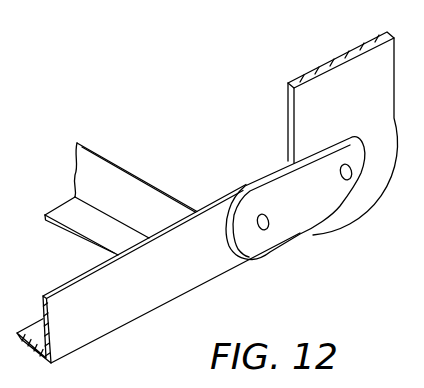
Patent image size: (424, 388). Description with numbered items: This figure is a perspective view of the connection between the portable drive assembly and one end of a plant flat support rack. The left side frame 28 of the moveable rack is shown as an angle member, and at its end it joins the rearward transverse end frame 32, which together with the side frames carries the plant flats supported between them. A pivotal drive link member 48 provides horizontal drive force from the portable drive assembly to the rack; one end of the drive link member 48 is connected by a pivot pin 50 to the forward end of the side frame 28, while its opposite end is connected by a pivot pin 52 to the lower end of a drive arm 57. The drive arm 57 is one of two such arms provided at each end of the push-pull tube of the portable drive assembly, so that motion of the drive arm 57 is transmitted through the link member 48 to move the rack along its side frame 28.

The left side frame 28 is at (105, 319).
The rearward transverse end frame 32 is at (124, 165).
The pivotal drive link member 48 is at (293, 223).
The pivot pin 50 is at (263, 230).
The pivot pin 52 is at (353, 166).
The drive arm 57 is at (382, 95).